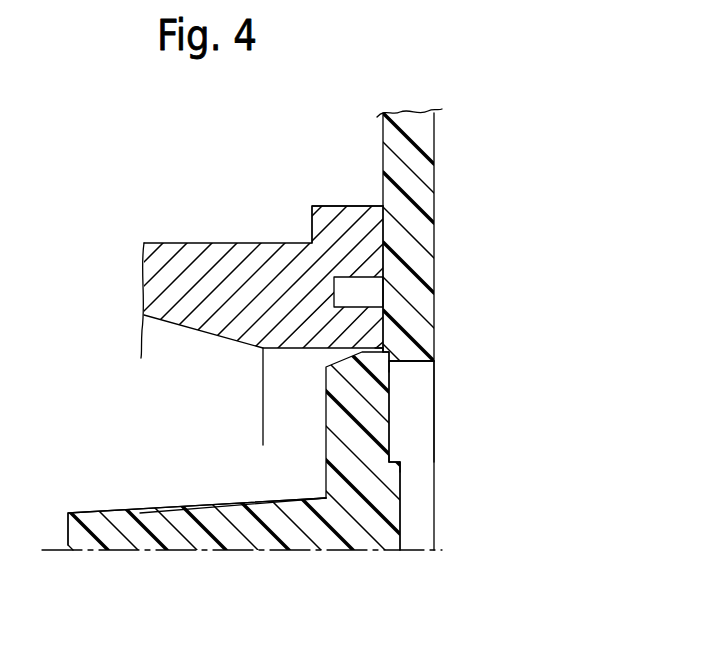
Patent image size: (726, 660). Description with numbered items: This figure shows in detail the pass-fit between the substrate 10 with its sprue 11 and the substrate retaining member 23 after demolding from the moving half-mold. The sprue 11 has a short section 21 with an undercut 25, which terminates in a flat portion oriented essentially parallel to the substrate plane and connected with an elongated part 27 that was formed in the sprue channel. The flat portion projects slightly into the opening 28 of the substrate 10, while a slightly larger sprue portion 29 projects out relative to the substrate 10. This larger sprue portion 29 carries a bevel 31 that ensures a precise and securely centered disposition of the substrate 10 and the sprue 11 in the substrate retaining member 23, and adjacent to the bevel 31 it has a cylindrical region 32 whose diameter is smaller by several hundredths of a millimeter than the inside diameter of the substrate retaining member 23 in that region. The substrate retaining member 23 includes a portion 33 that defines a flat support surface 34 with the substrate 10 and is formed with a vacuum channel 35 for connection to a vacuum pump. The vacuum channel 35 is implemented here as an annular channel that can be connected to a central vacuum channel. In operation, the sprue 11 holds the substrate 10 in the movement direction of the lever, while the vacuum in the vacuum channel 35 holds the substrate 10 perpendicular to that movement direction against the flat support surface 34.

The substrate 10 is at (380, 129).
The sprue 11 is at (92, 513).
The short section 21 is at (397, 510).
The substrate retaining member 23 is at (150, 290).
The undercut 25 is at (392, 458).
The elongated part 27 is at (185, 527).
The opening 28 is at (402, 408).
The larger sprue portion 29 is at (341, 422).
The bevel 31 is at (378, 348).
The cylindrical region 32 is at (388, 369).
The portion 33 is at (326, 213).
The flat support surface 34 is at (391, 253).
The vacuum channel 35 is at (362, 293).